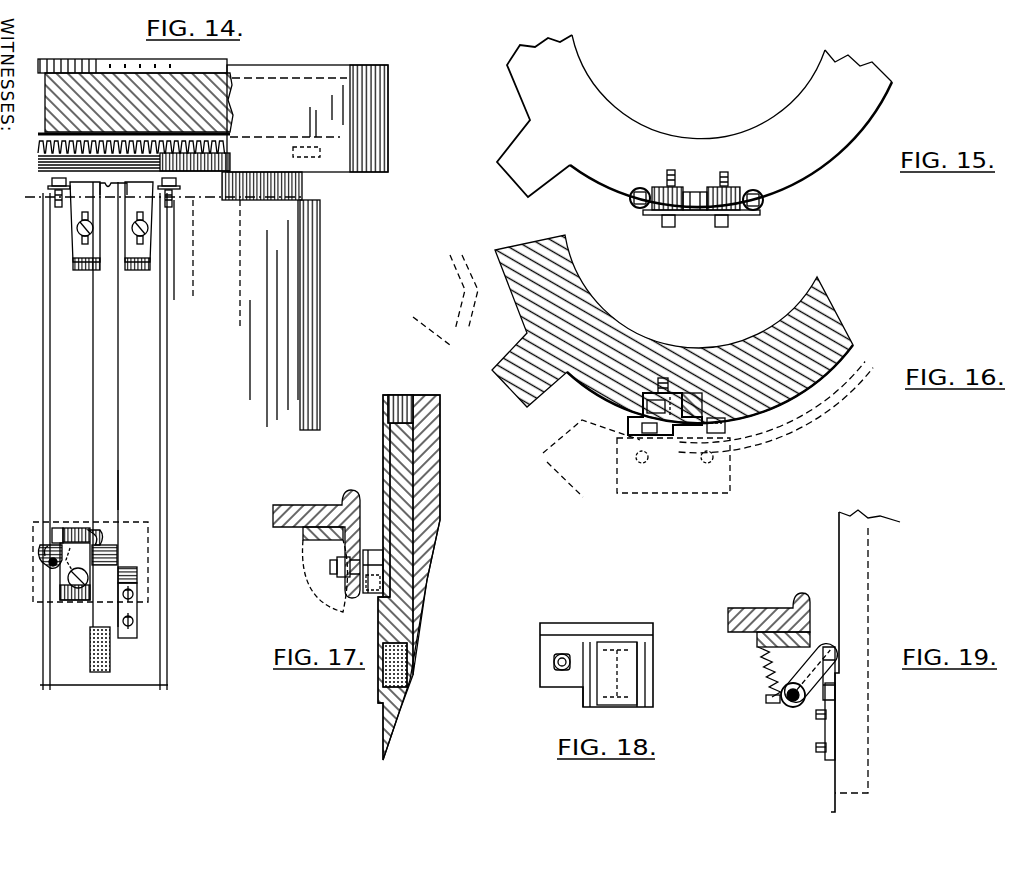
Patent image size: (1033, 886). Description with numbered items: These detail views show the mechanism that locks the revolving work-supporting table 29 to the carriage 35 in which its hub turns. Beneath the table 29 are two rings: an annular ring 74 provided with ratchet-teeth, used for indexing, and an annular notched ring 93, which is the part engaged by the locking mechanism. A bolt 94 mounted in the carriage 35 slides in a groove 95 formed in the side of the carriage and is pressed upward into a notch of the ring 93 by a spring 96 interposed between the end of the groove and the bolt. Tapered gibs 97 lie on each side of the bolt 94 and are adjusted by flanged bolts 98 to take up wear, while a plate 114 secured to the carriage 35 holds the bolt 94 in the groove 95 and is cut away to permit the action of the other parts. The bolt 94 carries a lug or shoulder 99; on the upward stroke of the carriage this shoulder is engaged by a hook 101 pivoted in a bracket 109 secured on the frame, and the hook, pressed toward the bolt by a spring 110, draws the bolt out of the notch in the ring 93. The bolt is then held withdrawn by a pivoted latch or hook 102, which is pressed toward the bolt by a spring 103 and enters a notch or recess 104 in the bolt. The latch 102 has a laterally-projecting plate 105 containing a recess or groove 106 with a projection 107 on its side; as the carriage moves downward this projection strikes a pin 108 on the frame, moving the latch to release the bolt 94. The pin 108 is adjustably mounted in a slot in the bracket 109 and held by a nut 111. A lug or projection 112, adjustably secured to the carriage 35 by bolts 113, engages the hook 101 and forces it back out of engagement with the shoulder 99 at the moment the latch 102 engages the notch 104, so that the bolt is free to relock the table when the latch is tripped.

In FIG. 14, the circular table 29 is at (388, 118).
In FIG. 14, the carriage 35 is at (302, 265).
In FIG. 15, the carriage 35 is at (694, 121).
In FIG. 16, the carriage 35 is at (790, 310).
In FIG. 14, the annular ring 74 is at (302, 187).
In FIG. 14, the annular notched ring 93 is at (42, 138).
In FIG. 14, the bolt 94 is at (108, 365).
In FIG. 17, the bolt 94 is at (407, 490).
In FIG. 14, the groove 95 is at (118, 492).
In FIG. 16, the groove 95 is at (700, 393).
In FIG. 17, the groove 95 is at (413, 410).
In FIG. 14, the spring 96 is at (80, 250).
In FIG. 17, the spring 96 is at (383, 680).
In FIG. 14, the tapered gibs 97 is at (143, 250).
In FIG. 15, the tapered gibs 97 is at (680, 190).
In FIG. 14, the flanged bolts 98 is at (52, 185).
In FIG. 15, the flanged bolts 98 is at (643, 190).
In FIG. 14, the lug or shoulder 99 is at (117, 553).
In FIG. 17, the lug or shoulder 99 is at (374, 550).
In FIG. 19, the lug or shoulder 99 is at (836, 655).
In FIG. 18, the hook 101 is at (610, 650).
In FIG. 19, the hook 101 is at (818, 650).
In FIG. 14, the pivoted latch or hook 102 is at (82, 527).
In FIG. 16, the pivoted latch or hook 102 is at (678, 390).
In FIG. 14, the spring 103 is at (55, 527).
In FIG. 16, the spring 103 is at (645, 403).
In FIG. 14, the notch or recess 104 is at (102, 536).
In FIG. 14, the laterally-projecting plate 105 is at (60, 580).
In FIG. 16, the laterally-projecting plate 105 is at (667, 430).
In FIG. 17, the laterally-projecting plate 105 is at (372, 596).
In FIG. 14, the recess or groove 106 is at (53, 542).
In FIG. 14, the projection 107 is at (40, 550).
In FIG. 14, the pin 108 is at (46, 562).
In FIG. 16, the bracket 109 is at (728, 480).
In FIG. 18, the bracket 109 is at (650, 630).
In FIG. 19, the bracket 109 is at (757, 645).
In FIG. 19, the spring 110 is at (767, 677).
In FIG. 17, the nut 111 is at (337, 567).
In FIG. 18, the nut 111 is at (552, 668).
In FIG. 14, the lug or projection 112 is at (137, 578).
In FIG. 16, the lug or projection 112 is at (728, 430).
In FIG. 19, the lug or projection 112 is at (825, 723).
In FIG. 14, the bolts 113 is at (134, 596).
In FIG. 19, the bolts 113 is at (826, 748).
In FIG. 17, the plate 114 is at (386, 448).